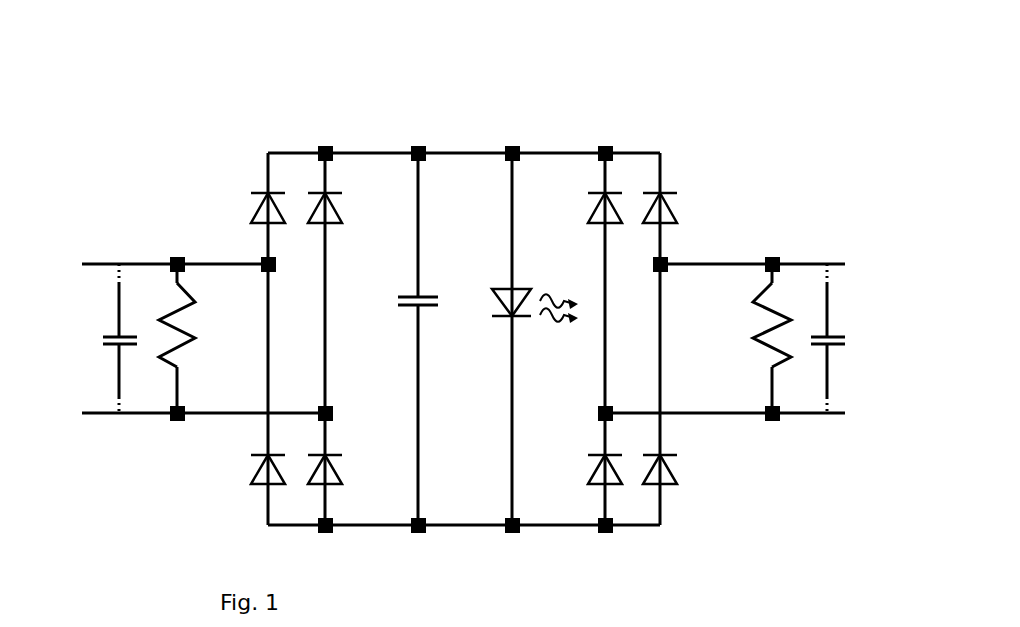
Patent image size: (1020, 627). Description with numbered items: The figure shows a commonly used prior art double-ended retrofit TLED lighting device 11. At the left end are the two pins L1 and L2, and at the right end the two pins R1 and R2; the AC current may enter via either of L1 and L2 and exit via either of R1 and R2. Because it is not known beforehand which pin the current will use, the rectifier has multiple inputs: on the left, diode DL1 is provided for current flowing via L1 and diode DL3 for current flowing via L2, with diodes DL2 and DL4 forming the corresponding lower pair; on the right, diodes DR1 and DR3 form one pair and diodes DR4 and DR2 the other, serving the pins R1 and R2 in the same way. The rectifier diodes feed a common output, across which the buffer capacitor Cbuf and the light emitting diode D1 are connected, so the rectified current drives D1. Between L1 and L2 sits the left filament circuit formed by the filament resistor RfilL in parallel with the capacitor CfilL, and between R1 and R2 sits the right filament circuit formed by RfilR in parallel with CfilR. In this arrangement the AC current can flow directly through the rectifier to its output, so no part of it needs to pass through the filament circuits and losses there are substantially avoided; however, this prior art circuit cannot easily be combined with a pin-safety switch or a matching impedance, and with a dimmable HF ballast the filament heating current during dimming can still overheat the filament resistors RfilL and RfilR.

The LED lighting circuit 11 is at (674, 0).
The rectifier diode DL1 is at (241, 208).
The rectifier diode DL2 is at (241, 470).
The rectifier diode DL3 is at (351, 208).
The rectifier diode DL4 is at (351, 470).
The rectifier diode DR1 is at (690, 208).
The rectifier diode DR2 is at (691, 470).
The rectifier diode DR3 is at (576, 208).
The rectifier diode DR4 is at (575, 470).
The light emitting diode D1 is at (535, 290).
The buffer capacitor Cbuf is at (444, 339).
The left filter capacitor CfilL is at (92, 338).
The filament resistor RfilL is at (199, 338).
The right filter capacitor CfilR is at (863, 338).
The filament resistor RfilR is at (745, 338).
The pin L1 is at (159, 266).
The pin L2 is at (187, 415).
The pin R1 is at (770, 266).
The pin R2 is at (742, 415).